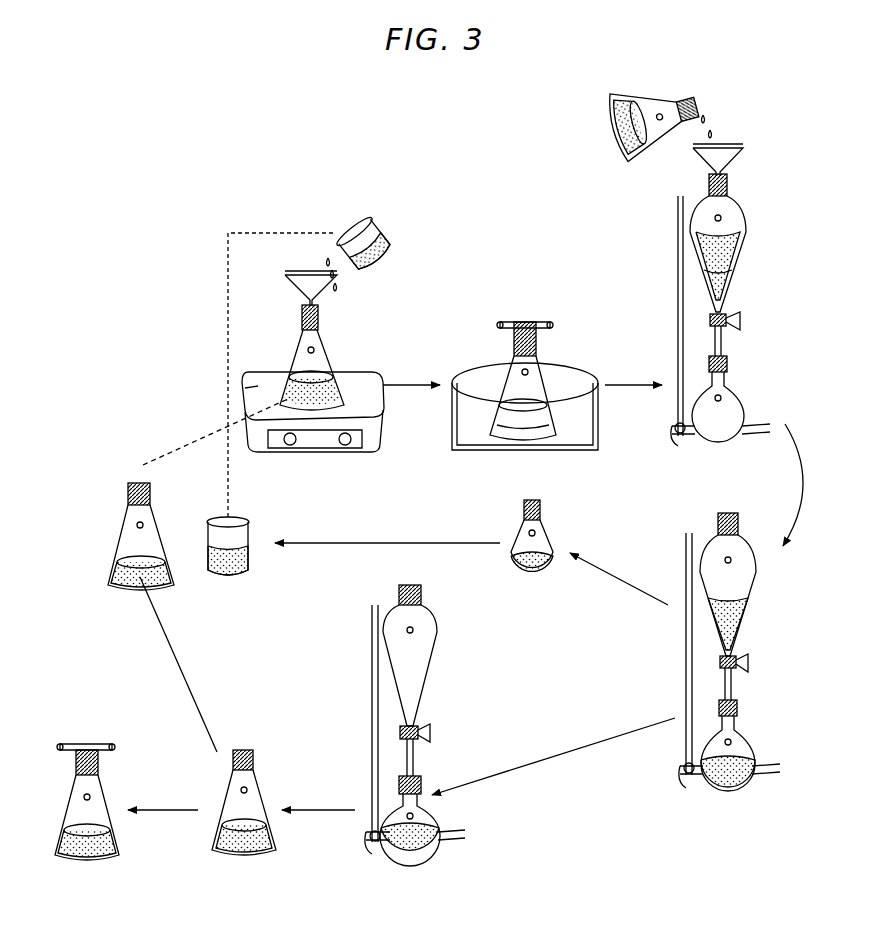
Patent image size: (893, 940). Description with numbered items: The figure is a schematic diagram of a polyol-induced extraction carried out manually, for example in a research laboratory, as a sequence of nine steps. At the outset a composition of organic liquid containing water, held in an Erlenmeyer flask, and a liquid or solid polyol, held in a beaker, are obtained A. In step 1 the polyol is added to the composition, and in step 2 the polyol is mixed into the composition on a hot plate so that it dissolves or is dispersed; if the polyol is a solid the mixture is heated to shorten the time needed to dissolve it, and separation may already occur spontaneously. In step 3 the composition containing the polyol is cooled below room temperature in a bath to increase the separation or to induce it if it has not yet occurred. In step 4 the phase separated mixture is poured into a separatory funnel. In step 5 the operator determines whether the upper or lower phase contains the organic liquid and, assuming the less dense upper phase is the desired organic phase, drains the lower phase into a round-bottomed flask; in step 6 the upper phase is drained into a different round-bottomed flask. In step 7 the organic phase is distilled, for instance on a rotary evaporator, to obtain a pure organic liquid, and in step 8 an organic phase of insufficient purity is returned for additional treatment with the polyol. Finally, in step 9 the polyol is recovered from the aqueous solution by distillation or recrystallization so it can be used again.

The Step 1 polyol addition 1 is at (337, 312).
The Step 2 mixing and heating 2 is at (313, 399).
The Step 3 cooling 3 is at (525, 372).
The Step 4 separatory funnel transfer 4 is at (687, 259).
The Step 5 lower phase draining 5 is at (729, 652).
The Step 6 upper phase draining 6 is at (415, 725).
The Step 7 distillation 7 is at (283, 802).
The Step 8 additional polyol treatment 8 is at (126, 802).
The Step 9 polyol recovery 9 is at (414, 535).
The starting composition and polyol A is at (129, 536).